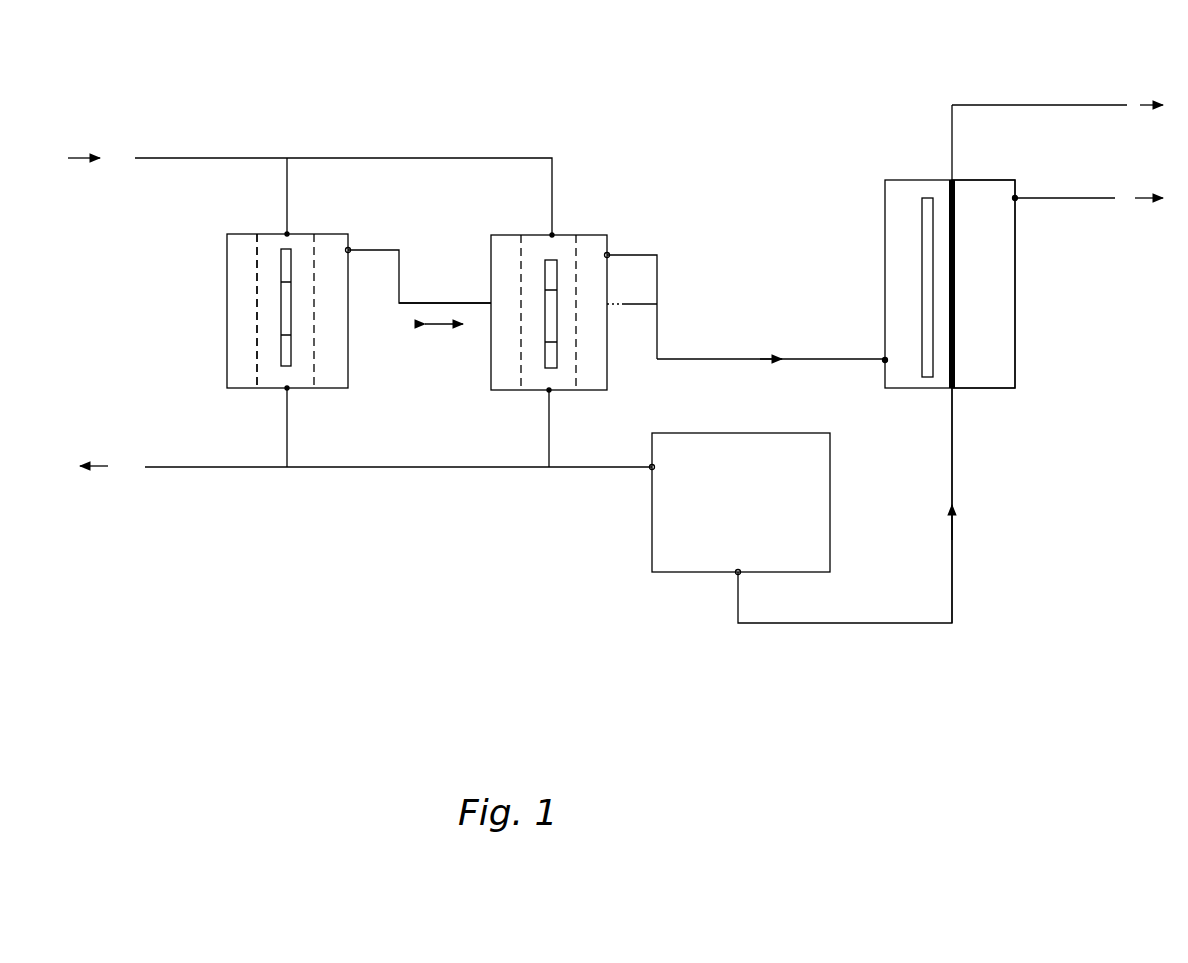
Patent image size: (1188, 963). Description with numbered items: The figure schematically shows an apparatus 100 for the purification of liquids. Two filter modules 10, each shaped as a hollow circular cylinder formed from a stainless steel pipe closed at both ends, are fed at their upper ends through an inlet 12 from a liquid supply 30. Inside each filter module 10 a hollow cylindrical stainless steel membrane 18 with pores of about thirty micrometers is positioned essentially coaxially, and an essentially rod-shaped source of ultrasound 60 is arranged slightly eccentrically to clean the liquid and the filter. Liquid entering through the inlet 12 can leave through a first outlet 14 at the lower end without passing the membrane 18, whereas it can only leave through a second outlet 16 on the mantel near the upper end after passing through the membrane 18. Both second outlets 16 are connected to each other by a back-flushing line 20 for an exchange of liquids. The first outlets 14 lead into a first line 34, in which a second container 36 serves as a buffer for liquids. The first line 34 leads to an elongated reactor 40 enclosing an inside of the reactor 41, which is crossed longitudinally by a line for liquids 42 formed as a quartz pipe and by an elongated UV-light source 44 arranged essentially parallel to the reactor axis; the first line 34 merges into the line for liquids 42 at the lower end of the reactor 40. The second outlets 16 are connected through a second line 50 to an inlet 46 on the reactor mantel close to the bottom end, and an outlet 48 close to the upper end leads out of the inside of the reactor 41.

The apparatus 100 is at (614, 64).
The liquid supply 30 is at (387, 148).
The filter module 10 is at (226, 380).
The inlet 12 is at (295, 226).
The first outlet 14 is at (295, 395).
The second outlet 16 is at (352, 238).
The stainless steel membrane 18 is at (248, 266).
The source of ultrasound 60 is at (277, 313).
The back-flushing line 20 is at (425, 300).
The first line 34 is at (458, 477).
The second container 36 is at (640, 563).
The second line 50 is at (718, 353).
The reactor 40 is at (872, 208).
The inside of the reactor 41 is at (990, 345).
The line for liquids 42 is at (968, 281).
The UV-light source 44 is at (926, 278).
The inlet 46 is at (878, 368).
The outlet 48 is at (1018, 190).